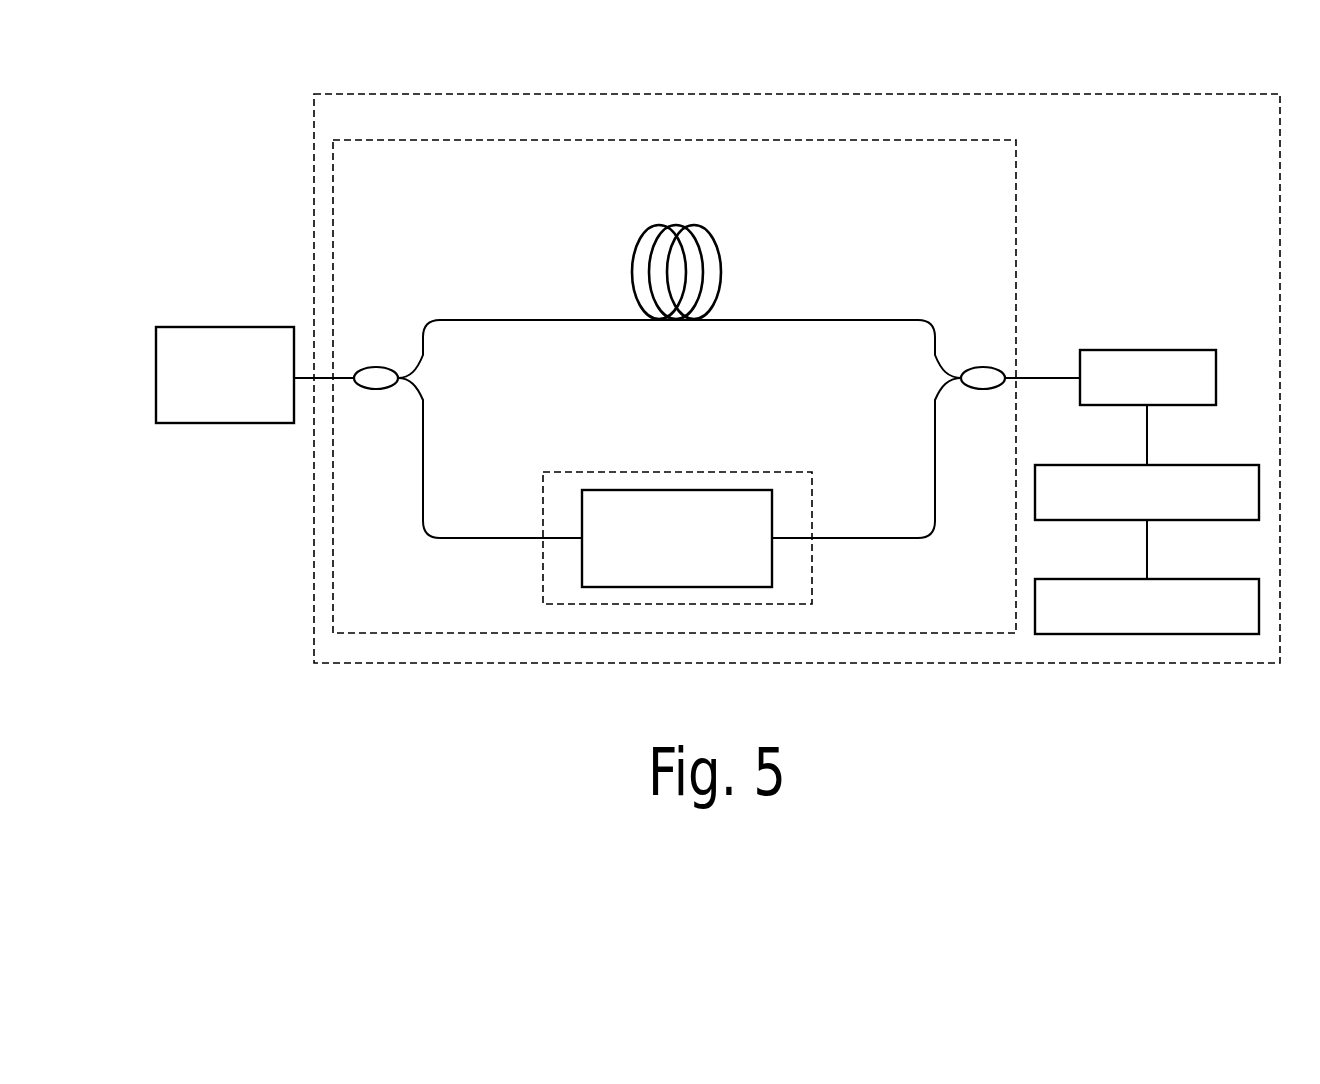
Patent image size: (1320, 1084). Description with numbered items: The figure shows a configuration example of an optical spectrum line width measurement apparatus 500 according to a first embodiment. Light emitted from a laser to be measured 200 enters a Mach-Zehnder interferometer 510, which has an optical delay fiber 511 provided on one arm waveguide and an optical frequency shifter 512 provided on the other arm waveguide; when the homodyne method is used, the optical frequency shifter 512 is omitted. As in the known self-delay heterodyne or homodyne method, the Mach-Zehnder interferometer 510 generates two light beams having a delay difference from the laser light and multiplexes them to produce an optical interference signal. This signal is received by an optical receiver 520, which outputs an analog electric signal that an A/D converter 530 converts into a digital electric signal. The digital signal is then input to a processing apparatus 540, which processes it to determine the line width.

The laser to be measured 200 is at (232, 327).
The optical spectrum line width measurement apparatus 500 is at (1198, 94).
The Mach-Zehnder interferometer 510 is at (918, 140).
The optical delay fiber 511 is at (712, 232).
The optical frequency shifter 512 is at (752, 490).
The optical receiver 520 is at (1155, 350).
The A/D converter 530 is at (1195, 465).
The processing apparatus 540 is at (1195, 579).